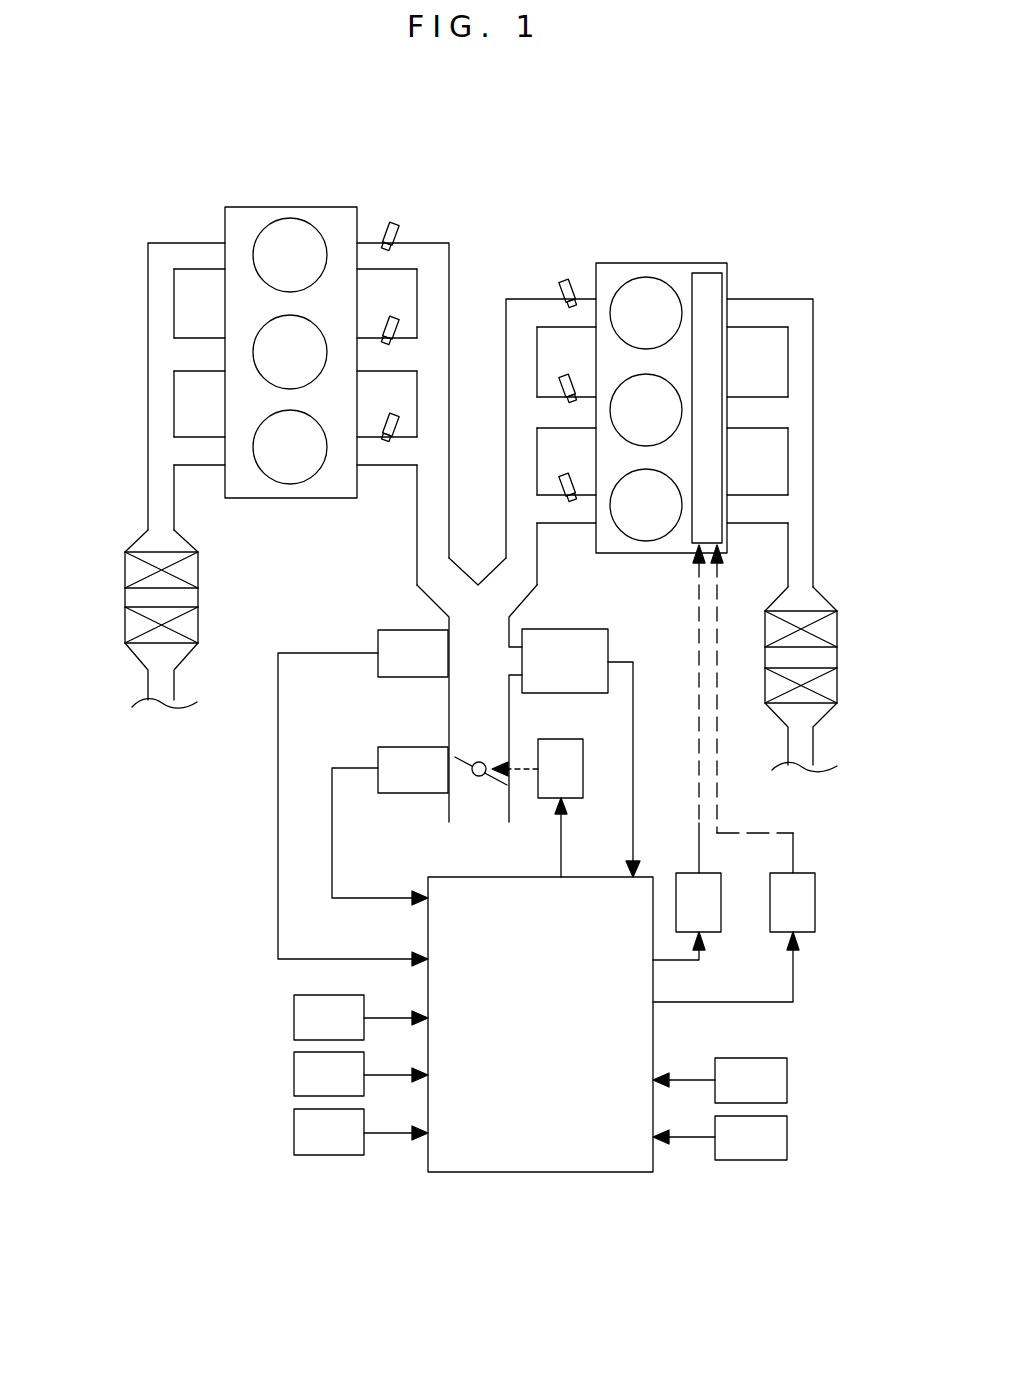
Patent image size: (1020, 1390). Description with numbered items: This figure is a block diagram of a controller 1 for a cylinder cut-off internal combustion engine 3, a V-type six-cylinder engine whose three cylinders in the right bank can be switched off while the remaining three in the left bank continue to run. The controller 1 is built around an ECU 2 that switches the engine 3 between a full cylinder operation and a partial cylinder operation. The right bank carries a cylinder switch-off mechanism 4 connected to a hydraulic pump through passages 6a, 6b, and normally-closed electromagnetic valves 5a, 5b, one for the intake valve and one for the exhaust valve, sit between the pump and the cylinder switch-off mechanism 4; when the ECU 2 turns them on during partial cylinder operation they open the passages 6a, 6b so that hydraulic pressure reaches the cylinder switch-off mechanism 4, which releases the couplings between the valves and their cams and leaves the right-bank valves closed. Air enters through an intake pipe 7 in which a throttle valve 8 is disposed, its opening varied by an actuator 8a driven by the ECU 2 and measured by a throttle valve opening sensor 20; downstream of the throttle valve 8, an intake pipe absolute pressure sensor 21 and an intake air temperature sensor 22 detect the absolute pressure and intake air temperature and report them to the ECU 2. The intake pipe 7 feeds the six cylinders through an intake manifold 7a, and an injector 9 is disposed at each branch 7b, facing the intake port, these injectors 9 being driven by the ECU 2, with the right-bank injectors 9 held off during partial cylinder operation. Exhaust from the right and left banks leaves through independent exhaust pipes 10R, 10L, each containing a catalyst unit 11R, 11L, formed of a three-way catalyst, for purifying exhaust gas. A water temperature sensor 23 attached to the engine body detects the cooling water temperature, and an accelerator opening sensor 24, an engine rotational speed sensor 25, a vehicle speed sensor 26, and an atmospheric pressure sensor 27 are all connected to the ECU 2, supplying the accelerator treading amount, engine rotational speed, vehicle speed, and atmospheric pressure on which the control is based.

The controller 1 is at (469, 1248).
The ECU 2 is at (555, 1172).
The cylinder cut-off internal combustion engine 3 is at (285, 207).
The cylinder switch-off mechanism 4 is at (722, 296).
The electromagnetic valve 5a is at (721, 902).
The electromagnetic valve 5b is at (815, 902).
The passage 6a is at (698, 850).
The passage 6b is at (718, 825).
The intake pipe 7 is at (449, 733).
The intake manifold 7a is at (506, 413).
The branch 7b is at (415, 243).
The throttle valve 8 is at (480, 779).
The actuator 8a is at (572, 798).
The injector 9 is at (395, 222).
The exhaust pipe 10L is at (150, 243).
The exhaust pipe 10R is at (813, 398).
The catalyst unit 11L is at (198, 592).
The catalyst unit 11R is at (837, 653).
The throttle valve opening sensor 20 is at (402, 793).
The intake pipe absolute pressure sensor 21 is at (577, 629).
The intake air temperature sensor 22 is at (378, 632).
The water temperature sensor 23 is at (787, 1119).
The accelerator opening sensor 24 is at (294, 1018).
The engine rotational speed sensor 25 is at (294, 1075).
The vehicle speed sensor 26 is at (294, 1133).
The atmospheric pressure sensor 27 is at (787, 1060).